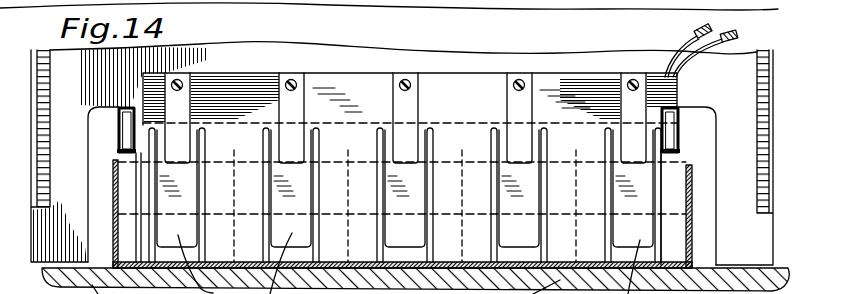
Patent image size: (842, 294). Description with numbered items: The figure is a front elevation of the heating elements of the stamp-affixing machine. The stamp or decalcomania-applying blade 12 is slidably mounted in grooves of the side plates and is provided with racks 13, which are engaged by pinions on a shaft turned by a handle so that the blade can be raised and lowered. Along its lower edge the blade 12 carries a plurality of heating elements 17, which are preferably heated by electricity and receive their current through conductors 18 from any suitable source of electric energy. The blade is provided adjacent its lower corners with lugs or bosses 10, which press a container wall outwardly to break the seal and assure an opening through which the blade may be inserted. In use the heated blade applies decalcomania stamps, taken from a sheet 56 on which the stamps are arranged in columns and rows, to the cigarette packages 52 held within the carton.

The lugs or bosses 10 is at (123, 133).
The stamp or decalcomania-applying blade 12 is at (387, 33).
The racks 13 is at (50, 112).
The heating elements 17 is at (507, 189).
The conductors 18 is at (687, 44).
The cigarette packages 52 is at (247, 165).
The sheet 56 is at (373, 293).